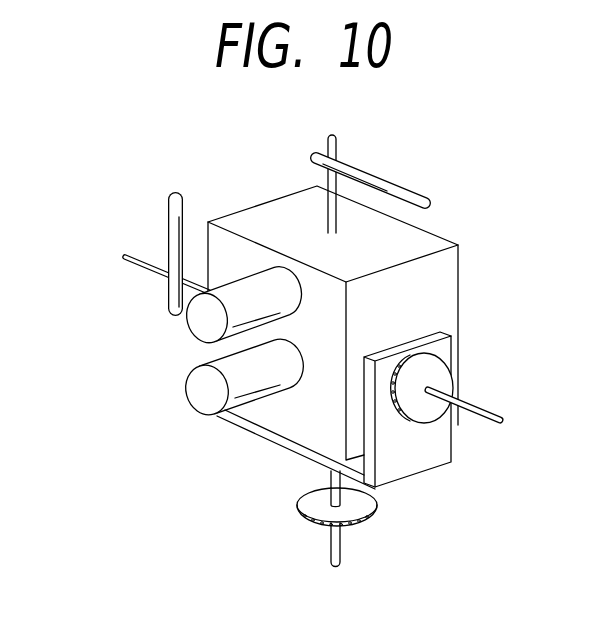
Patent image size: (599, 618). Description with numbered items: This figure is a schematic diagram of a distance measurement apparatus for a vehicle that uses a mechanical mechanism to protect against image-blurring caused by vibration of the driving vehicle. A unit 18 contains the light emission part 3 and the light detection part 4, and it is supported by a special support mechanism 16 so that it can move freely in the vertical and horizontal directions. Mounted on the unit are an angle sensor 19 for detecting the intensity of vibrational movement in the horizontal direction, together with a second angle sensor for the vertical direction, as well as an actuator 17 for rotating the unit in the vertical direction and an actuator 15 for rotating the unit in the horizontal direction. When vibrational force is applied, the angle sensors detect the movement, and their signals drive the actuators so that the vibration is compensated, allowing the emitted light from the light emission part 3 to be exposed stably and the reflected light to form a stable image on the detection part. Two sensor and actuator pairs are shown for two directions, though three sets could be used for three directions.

The light emission part 3 is at (197, 403).
The light detection part 4 is at (192, 332).
The actuator 15 is at (363, 525).
The support mechanism 16 is at (427, 472).
The actuator 17 is at (451, 374).
The unit 18 is at (447, 240).
The angle sensor 19 is at (397, 183).